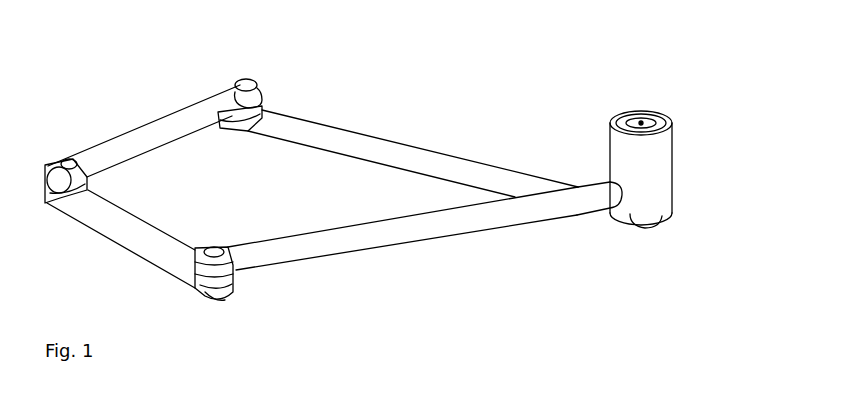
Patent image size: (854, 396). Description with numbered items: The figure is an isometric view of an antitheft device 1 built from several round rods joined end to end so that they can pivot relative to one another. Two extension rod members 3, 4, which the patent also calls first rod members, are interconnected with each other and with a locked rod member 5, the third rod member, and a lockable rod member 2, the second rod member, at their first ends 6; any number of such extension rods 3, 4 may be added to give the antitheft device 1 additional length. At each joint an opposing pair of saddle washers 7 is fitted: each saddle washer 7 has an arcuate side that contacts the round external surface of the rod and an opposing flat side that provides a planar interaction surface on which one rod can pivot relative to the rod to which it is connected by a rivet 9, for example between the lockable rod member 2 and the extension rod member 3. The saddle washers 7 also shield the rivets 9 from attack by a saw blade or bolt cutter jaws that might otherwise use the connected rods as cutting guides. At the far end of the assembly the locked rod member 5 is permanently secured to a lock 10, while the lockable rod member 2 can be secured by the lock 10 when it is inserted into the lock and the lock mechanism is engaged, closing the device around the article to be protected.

The antitheft device 1 is at (422, 262).
The lockable rod member 2 is at (340, 246).
The extension rod member 3 is at (130, 240).
The extension rod member 4 is at (145, 128).
The locked rod member 5 is at (393, 157).
The first ends 6 is at (265, 107).
The saddle washers 7 is at (193, 290).
The rivet 9 is at (247, 80).
The lock 10 is at (673, 173).